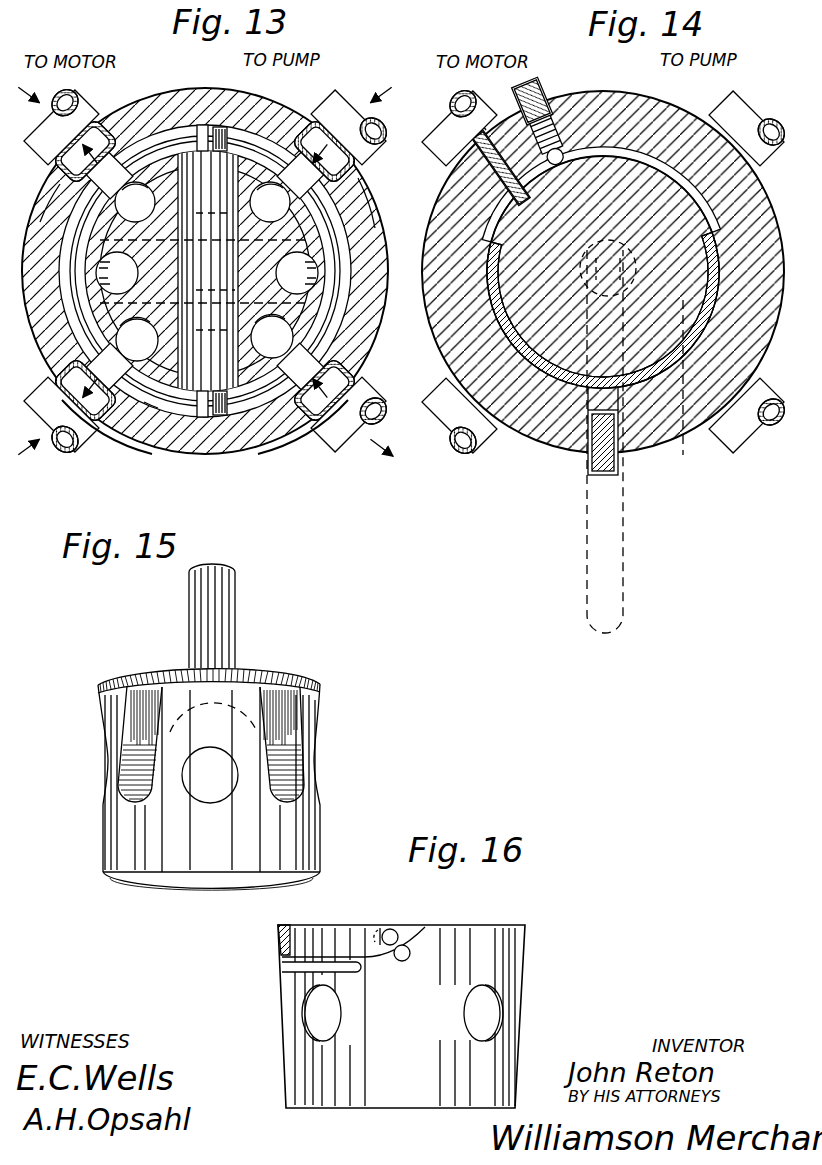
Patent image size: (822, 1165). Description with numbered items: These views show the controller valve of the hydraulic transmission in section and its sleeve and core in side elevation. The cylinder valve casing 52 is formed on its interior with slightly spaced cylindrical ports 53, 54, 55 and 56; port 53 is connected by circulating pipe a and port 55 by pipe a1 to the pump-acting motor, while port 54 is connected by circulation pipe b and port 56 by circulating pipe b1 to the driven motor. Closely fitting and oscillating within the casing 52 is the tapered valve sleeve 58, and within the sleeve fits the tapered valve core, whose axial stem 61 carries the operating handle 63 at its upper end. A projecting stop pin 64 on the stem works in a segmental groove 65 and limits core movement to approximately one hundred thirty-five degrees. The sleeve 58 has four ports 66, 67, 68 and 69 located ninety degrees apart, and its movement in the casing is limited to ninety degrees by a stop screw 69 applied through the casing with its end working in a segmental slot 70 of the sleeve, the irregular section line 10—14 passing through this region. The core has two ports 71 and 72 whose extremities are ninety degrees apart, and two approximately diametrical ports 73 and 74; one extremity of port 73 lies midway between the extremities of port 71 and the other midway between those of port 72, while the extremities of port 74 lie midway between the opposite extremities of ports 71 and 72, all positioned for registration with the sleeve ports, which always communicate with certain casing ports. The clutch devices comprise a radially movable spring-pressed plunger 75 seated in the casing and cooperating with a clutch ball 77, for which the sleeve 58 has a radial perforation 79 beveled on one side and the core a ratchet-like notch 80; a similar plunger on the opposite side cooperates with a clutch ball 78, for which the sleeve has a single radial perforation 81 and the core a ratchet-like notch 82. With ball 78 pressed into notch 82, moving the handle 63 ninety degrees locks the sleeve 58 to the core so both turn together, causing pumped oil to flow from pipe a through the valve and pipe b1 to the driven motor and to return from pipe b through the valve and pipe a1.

In FIG. 13, the cylinder valve casing 52 is at (286, 112).
In FIG. 14, the cylinder valve casing 52 is at (470, 236).
In FIG. 13, the cylindrical port 53 is at (360, 218).
In FIG. 13, the cylindrical port 54 is at (148, 432).
In FIG. 13, the cylindrical port 55 is at (240, 438).
In FIG. 13, the cylindrical port 56 is at (170, 138).
In FIG. 13, the valve sleeve 58 is at (226, 128).
In FIG. 14, the valve sleeve 58 is at (586, 456).
In FIG. 16, the valve sleeve 58 is at (400, 1085).
In FIG. 14, the axial stem 61 is at (558, 398).
In FIG. 15, the axial stem 61 is at (214, 612).
In FIG. 14, the operating handle 63 is at (624, 536).
In FIG. 14, the stop pin 64 is at (762, 332).
In FIG. 14, the segmental groove 65 is at (744, 238).
In FIG. 13, the port 66 is at (306, 328).
In FIG. 13, the port 67 is at (118, 372).
In FIG. 16, the port 67 is at (502, 1020).
In FIG. 13, the port 68 is at (300, 186).
In FIG. 13, the stop screw 69 is at (162, 196).
In FIG. 14, the stop screw 69 is at (468, 178).
In FIG. 16, the stop screw 69 is at (306, 1030).
In FIG. 14, the segmental slot 70 is at (690, 114).
In FIG. 16, the segmental slot 70 is at (306, 967).
In FIG. 13, the port 71 is at (180, 477).
In FIG. 15, the port 71 is at (284, 718).
In FIG. 13, the port 72 is at (204, 337).
In FIG. 15, the port 72 is at (318, 778).
In FIG. 13, the diametrical port 73 is at (205, 271).
In FIG. 15, the diametrical port 73 is at (213, 753).
In FIG. 13, the diametrical port 74 is at (207, 273).
In FIG. 14, the spring pressed plunger 75 is at (580, 104).
In FIG. 14, the clutch ball 77 is at (636, 122).
In FIG. 14, the clutch ball 78 is at (562, 283).
In FIG. 14, the radial perforation 79 is at (746, 210).
In FIG. 16, the radial perforation 79 is at (394, 932).
In FIG. 14, the ratchet-like notch 80 is at (695, 389).
In FIG. 14, the radial perforation 81 is at (492, 300).
In FIG. 16, the radial perforation 81 is at (402, 962).
In FIG. 14, the ratchet-like notch 82 is at (565, 262).
In FIG. 16, the section line indicator 10 is at (254, 954).
In FIG. 16, the section line indicator 14 is at (535, 945).
In FIG. 13, the circulating pipe a is at (345, 106).
In FIG. 14, the circulating pipe a is at (734, 110).
In FIG. 13, the circulating pipe a1 is at (340, 442).
In FIG. 13, the circulation pipe b is at (76, 450).
In FIG. 13, the circulating pipe b1 is at (80, 112).
In FIG. 14, the circulating pipe b1 is at (444, 124).